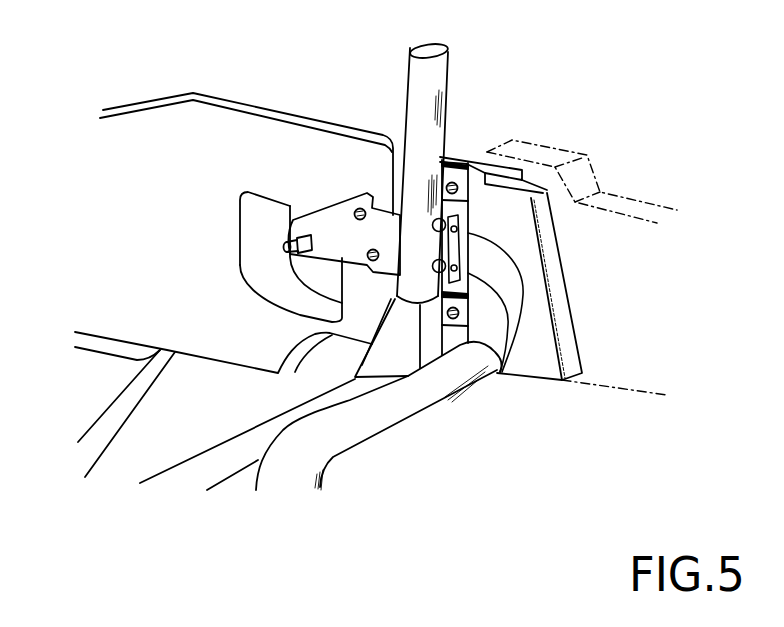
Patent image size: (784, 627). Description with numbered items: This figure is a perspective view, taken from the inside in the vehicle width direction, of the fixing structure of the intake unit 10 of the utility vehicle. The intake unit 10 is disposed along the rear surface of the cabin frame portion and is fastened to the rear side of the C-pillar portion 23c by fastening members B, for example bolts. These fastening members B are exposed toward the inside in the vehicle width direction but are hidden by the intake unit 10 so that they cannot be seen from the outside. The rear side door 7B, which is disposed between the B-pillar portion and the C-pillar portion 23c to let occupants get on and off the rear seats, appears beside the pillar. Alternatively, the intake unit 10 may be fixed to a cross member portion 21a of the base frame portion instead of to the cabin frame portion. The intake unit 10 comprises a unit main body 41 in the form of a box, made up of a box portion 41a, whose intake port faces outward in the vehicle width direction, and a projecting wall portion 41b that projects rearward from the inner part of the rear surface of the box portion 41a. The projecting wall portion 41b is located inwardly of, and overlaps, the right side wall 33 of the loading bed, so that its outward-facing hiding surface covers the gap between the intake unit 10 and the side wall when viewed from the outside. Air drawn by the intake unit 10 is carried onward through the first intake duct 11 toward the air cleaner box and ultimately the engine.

The rear side door 7B is at (174, 150).
The C-pillar portion 23c is at (403, 107).
The unit main body 41 is at (462, 158).
The box portion 41a is at (479, 158).
The projecting wall portion 41b is at (573, 342).
The right side wall 33 is at (643, 202).
The intake unit 10 is at (537, 376).
The fastening members B is at (463, 232).
The first intake duct 11 is at (380, 418).
The cross member portion 21a is at (208, 462).